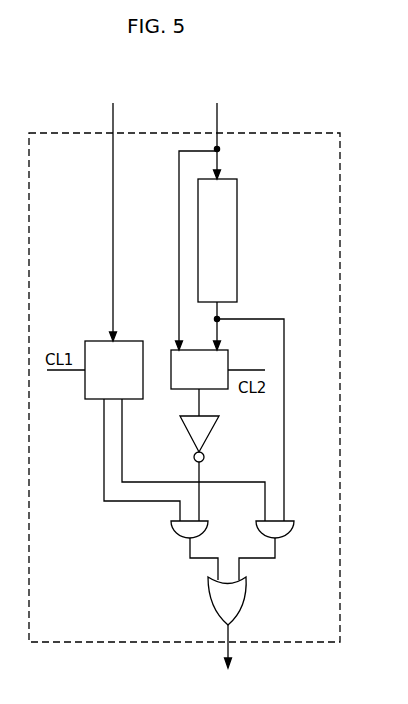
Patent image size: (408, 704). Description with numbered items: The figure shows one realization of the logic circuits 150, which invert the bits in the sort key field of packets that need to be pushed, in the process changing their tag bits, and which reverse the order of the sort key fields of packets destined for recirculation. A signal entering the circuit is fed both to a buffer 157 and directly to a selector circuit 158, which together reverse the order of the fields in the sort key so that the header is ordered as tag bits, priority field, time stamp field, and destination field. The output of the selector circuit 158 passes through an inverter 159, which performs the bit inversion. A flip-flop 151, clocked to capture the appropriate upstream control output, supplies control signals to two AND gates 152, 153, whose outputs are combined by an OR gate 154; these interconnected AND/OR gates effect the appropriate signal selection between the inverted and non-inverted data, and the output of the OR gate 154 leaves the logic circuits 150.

The logic circuits 150 is at (290, 133).
The flip-flop 151 is at (128, 341).
The AND gate 152 is at (171, 532).
The AND gate 153 is at (287, 530).
The OR gate 154 is at (246, 596).
The buffer 157 is at (238, 205).
The selector circuit 158 is at (229, 358).
The inverter 159 is at (207, 424).